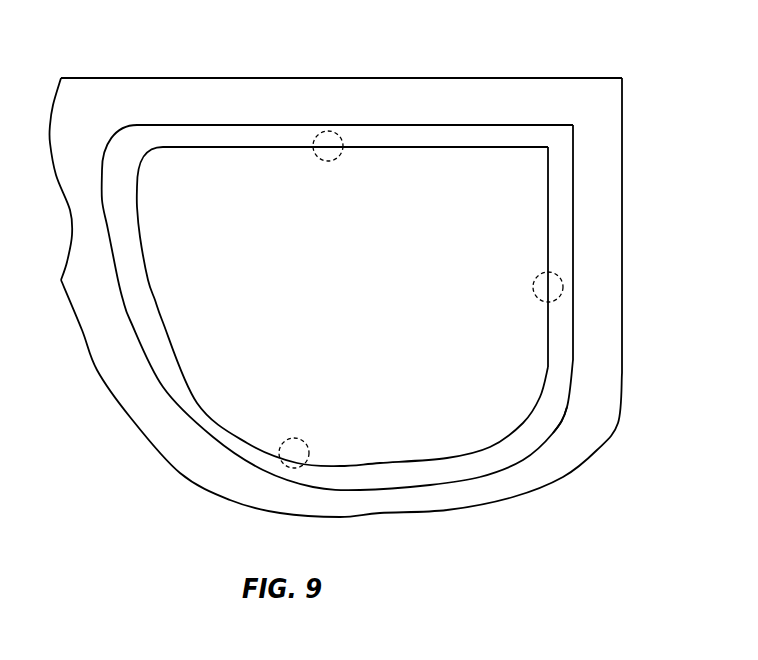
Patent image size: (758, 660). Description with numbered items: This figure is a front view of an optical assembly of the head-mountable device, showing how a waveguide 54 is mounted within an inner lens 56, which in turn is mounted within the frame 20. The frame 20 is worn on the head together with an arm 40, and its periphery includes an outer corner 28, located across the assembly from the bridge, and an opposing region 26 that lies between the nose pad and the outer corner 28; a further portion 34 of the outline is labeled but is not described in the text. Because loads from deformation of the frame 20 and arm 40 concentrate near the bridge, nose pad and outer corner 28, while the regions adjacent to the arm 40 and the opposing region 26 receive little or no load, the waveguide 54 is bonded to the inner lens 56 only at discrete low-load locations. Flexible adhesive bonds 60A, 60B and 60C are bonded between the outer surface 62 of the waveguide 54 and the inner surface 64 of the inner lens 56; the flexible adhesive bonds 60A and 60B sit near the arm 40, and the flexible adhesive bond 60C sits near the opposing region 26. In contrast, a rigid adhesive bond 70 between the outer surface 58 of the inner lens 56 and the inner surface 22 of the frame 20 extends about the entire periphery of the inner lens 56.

The frame 20 is at (612, 154).
The inner surface of the frame 22 is at (575, 345).
The opposing region 26 is at (273, 510).
The outer corner 28 is at (593, 457).
The side portion 34 is at (90, 363).
The arm 40 is at (585, 78).
The waveguide 54 is at (447, 163).
The inner lens 56 is at (375, 133).
The outer surface of the inner lens 58 is at (572, 365).
The flexible adhesive bond 60A is at (323, 130).
The flexible adhesive bond 60B is at (560, 297).
The flexible adhesive bond 60C is at (300, 470).
The outer surface of the waveguide 62 is at (548, 240).
The inner surface of the inner lens 64 is at (550, 223).
The rigid adhesive bond 70 is at (568, 397).